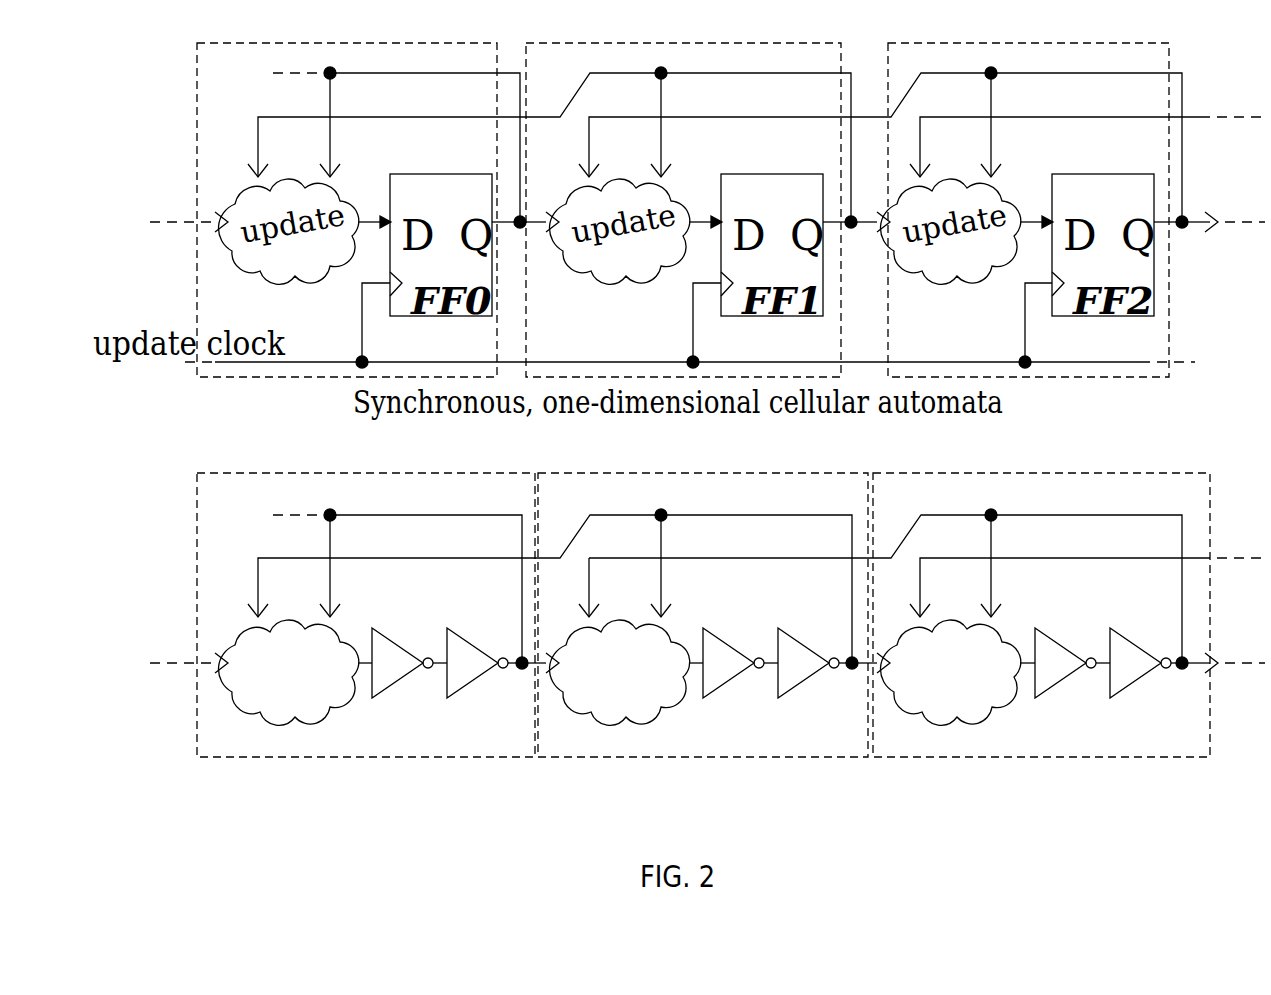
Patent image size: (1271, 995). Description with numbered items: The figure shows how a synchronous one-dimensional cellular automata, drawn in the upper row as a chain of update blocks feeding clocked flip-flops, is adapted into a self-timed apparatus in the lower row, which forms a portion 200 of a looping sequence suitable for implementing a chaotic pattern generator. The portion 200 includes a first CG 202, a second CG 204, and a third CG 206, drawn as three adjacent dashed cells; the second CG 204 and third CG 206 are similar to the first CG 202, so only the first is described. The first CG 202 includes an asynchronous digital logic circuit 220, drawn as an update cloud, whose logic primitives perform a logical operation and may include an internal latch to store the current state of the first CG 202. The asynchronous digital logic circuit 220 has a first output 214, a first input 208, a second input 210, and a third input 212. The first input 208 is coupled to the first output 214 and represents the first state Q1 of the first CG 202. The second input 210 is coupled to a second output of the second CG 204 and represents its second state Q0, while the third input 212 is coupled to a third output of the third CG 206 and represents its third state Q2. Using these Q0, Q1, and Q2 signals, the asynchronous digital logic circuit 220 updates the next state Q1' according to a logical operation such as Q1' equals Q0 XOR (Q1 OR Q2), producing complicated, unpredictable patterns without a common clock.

The portion of a looping sequence 200 is at (164, 462).
The first CG 202 is at (810, 646).
The second CG 204 is at (501, 615).
The third CG 206 is at (1058, 615).
The first input 208 is at (668, 606).
The second input 210 is at (535, 667).
The third input 212 is at (588, 612).
The first output 214 is at (712, 640).
The asynchronous digital logic circuit 220 is at (620, 672).